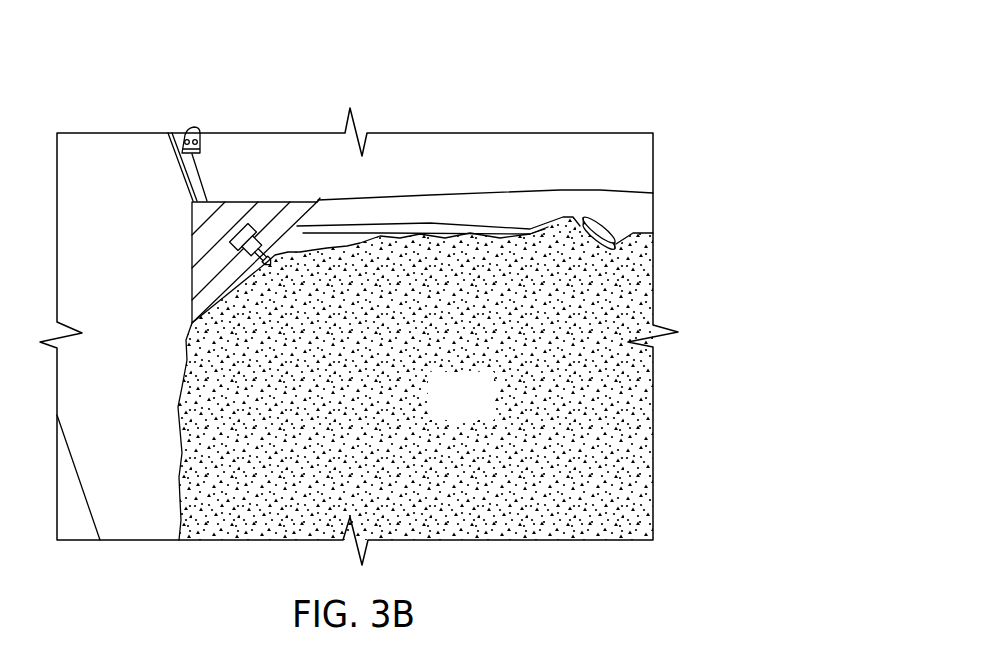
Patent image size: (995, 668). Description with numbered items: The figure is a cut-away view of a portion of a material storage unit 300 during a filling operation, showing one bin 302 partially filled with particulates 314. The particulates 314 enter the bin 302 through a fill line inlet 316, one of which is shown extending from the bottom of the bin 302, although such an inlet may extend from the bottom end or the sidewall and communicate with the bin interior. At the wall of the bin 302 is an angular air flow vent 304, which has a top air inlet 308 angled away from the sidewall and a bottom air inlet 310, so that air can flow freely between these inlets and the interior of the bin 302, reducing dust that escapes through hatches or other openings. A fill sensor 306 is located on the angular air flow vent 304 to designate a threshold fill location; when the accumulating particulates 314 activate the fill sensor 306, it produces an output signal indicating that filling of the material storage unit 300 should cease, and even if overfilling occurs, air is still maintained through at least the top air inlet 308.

The material storage unit 300 is at (586, 76).
The bin 302 is at (549, 195).
The angular air flow vent 304 is at (200, 245).
The fill sensor 306 is at (257, 230).
The top air inlet 308 is at (319, 200).
The bottom air inlet 310 is at (188, 331).
The particulates 314 is at (482, 412).
The fill line inlet 316 is at (604, 231).